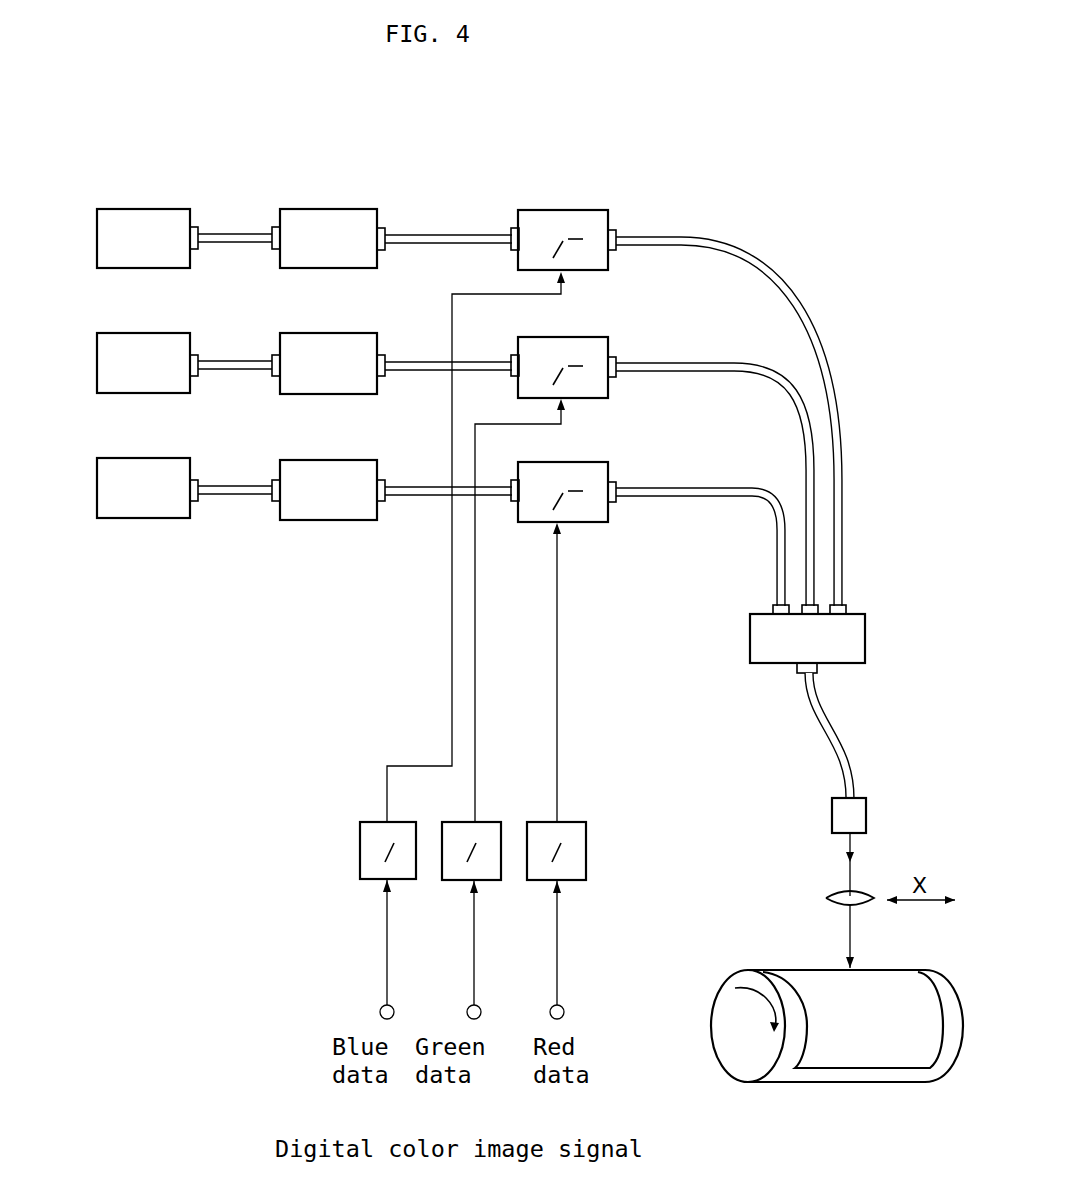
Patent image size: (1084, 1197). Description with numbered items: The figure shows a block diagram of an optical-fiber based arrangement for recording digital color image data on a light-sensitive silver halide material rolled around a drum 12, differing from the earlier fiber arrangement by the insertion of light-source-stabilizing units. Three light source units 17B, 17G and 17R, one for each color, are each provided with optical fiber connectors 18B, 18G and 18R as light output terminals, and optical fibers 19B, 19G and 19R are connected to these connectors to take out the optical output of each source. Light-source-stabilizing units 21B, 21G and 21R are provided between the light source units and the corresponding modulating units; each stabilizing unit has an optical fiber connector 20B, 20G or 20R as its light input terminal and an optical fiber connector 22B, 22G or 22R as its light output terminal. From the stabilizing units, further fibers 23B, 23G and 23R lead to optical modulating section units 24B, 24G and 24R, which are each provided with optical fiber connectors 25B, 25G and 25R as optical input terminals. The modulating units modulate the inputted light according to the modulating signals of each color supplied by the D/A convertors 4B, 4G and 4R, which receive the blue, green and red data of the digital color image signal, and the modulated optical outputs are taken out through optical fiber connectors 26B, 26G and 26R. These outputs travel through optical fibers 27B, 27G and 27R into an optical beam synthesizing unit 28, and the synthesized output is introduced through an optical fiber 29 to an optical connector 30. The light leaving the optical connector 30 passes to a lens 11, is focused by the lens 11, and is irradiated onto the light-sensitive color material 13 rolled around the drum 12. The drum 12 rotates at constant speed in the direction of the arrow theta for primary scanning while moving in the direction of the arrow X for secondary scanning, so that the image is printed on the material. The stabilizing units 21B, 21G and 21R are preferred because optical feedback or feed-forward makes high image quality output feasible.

The D/A convertor 4B is at (366, 822).
The D/A convertor 4G is at (480, 822).
The D/A convertor 4R is at (570, 822).
The lens 11 is at (826, 897).
The drum 12 is at (903, 1085).
The photosensitive recording material 13 is at (895, 985).
The light source unit 17B is at (148, 208).
The light source unit 17G is at (150, 333).
The light source unit 17R is at (150, 458).
The optical fiber connector 18B is at (196, 227).
The optical fiber connector 18G is at (197, 355).
The optical fiber connector 18R is at (197, 480).
The optical fiber 19B is at (226, 233).
The optical fiber 19G is at (230, 361).
The optical fiber 19R is at (243, 497).
The optical fiber connector 20B is at (274, 227).
The optical fiber connector 20G is at (274, 355).
The optical fiber connector 20R is at (274, 480).
The light-source-stabilizing unit 21B is at (332, 208).
The light-source-stabilizing unit 21G is at (333, 333).
The light-source-stabilizing unit 21R is at (335, 460).
The optical fiber connector 22B is at (384, 228).
The optical fiber connector 22G is at (384, 355).
The optical fiber connector 22R is at (384, 480).
The optical fiber 23B is at (446, 236).
The optical fiber 23G is at (422, 371).
The optical fiber 23R is at (422, 497).
The optical modulating section unit 24B is at (567, 210).
The optical modulating section unit 24G is at (570, 338).
The optical modulating section unit 24R is at (570, 462).
The optical fiber connector 25B is at (512, 230).
The optical fiber connector 25G is at (512, 357).
The optical fiber connector 25R is at (512, 503).
The optical fiber connector 26B is at (612, 229).
The optical fiber connector 26G is at (613, 357).
The optical fiber connector 26R is at (613, 483).
The optical fiber 27B is at (742, 266).
The optical fiber 27G is at (745, 386).
The optical fiber 27R is at (752, 507).
The optical beam synthesizing unit 28 is at (865, 636).
The optical fiber 29 is at (832, 735).
The optical connector 30 is at (866, 812).